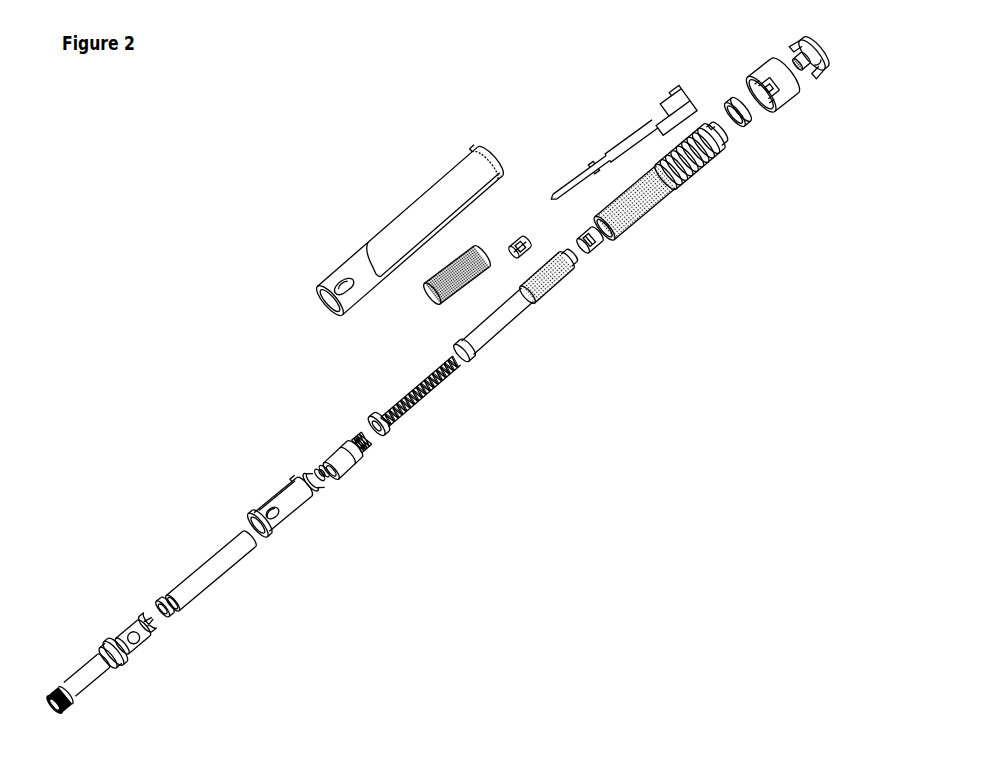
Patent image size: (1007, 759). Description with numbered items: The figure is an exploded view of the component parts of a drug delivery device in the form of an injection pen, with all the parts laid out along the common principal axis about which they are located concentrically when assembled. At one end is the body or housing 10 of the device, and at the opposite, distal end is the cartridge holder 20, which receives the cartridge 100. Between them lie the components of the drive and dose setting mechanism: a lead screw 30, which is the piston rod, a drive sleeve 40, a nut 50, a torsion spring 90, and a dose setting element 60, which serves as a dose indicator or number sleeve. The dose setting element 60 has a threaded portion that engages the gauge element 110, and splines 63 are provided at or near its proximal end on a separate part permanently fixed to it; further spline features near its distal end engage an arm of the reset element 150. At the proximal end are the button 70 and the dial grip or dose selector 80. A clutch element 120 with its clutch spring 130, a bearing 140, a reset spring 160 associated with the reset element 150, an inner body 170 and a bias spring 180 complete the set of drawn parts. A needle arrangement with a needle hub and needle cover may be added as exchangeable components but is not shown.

The housing 10 is at (417, 198).
The cartridge holder 20 is at (82, 697).
The lead screw 30 is at (430, 392).
The drive sleeve 40 is at (486, 352).
The nut 50 is at (522, 258).
The dose setting element 60 is at (636, 219).
The splines 63 is at (757, 132).
The button 70 is at (819, 78).
The dial grip 80 is at (763, 63).
The torsion spring 90 is at (417, 322).
The cartridge 100 is at (190, 607).
The gauge element 110 is at (617, 134).
The clutch element 120 is at (606, 256).
The clutch spring 130 is at (368, 456).
The bearing 140 is at (314, 462).
The reset element 150 is at (346, 480).
The reset spring 160 is at (392, 432).
The inner body 170 is at (273, 548).
The bias spring 180 is at (317, 490).